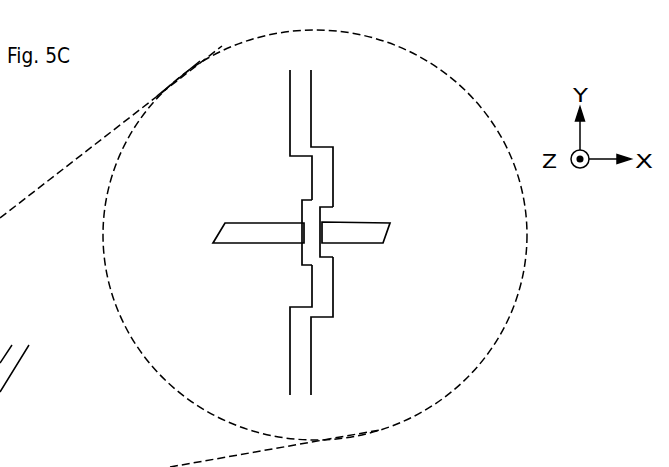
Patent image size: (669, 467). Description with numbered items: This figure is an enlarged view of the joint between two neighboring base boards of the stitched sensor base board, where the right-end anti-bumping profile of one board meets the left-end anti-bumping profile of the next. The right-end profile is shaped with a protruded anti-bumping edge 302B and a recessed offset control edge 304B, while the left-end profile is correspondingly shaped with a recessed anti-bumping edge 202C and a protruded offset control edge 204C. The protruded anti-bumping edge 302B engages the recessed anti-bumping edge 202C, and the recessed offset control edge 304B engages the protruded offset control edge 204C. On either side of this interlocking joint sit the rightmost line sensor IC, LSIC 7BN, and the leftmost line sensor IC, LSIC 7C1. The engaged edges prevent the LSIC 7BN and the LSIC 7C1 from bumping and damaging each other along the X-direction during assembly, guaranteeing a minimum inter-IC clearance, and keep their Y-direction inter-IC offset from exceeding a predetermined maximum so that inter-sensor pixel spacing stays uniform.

The protruded anti-bumping edge 302B is at (312, 172).
The recessed offset control edge 304B is at (311, 200).
The recessed anti-bumping edge 202C is at (333, 175).
The protruded offset control edge 204C is at (324, 210).
The LSIC 7BN is at (228, 237).
The LSIC 7C1 is at (386, 235).